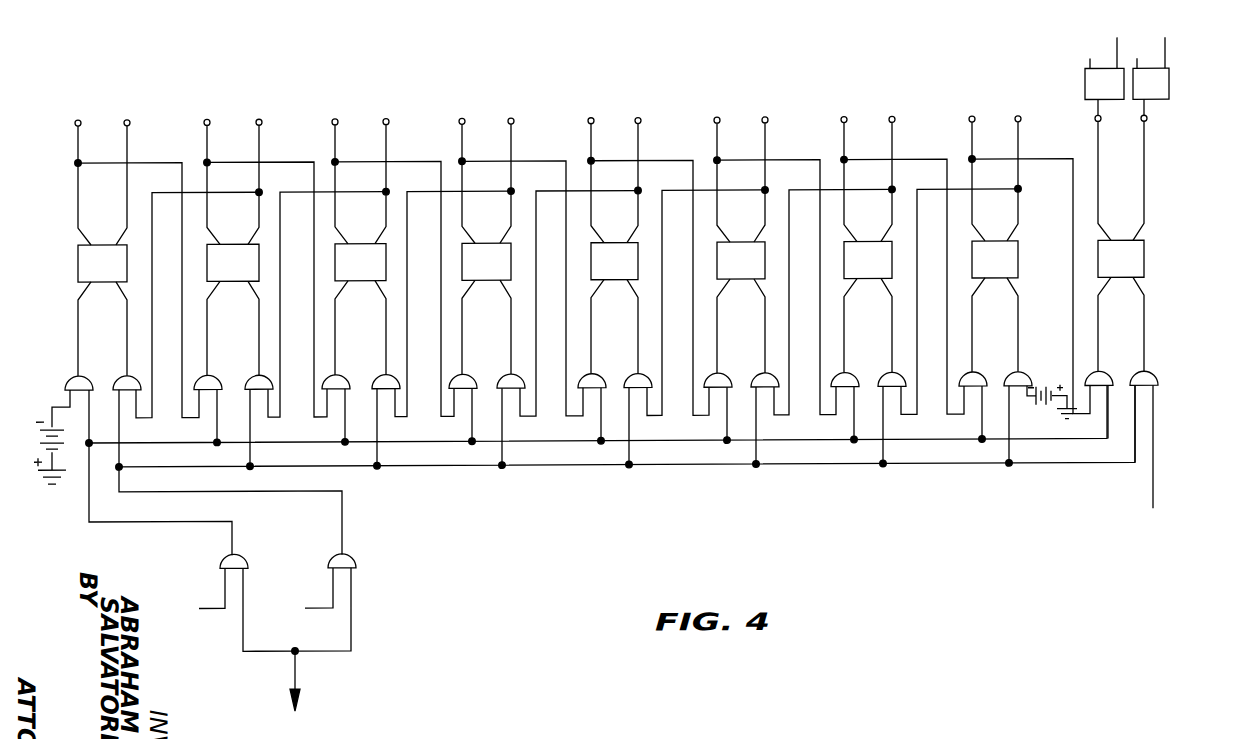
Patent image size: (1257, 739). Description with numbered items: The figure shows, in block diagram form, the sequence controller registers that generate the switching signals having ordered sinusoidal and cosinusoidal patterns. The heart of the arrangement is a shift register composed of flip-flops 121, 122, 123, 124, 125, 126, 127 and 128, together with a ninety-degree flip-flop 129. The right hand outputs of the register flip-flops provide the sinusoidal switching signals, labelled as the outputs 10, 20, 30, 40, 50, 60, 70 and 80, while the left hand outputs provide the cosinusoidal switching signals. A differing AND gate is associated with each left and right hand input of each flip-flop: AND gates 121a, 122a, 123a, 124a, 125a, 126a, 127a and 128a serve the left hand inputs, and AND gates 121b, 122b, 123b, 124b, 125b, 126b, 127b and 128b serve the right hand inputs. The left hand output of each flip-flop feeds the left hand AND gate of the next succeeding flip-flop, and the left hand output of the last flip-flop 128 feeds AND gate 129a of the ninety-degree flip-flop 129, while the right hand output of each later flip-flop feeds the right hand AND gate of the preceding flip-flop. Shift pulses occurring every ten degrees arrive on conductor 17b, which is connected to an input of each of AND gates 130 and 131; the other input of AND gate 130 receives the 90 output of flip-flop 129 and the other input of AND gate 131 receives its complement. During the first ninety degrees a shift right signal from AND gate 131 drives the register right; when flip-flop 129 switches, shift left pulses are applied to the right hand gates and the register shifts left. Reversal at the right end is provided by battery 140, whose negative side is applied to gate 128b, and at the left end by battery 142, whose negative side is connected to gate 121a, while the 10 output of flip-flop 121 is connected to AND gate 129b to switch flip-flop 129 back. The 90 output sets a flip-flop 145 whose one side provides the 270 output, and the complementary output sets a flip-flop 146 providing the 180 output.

The conductor 17b is at (298, 672).
The 10 output of flip-flop 121 10 is at (91, 90).
The 20 output of flip-flop 122 20 is at (220, 90).
The 30 output of flip-flop 123 30 is at (348, 90).
The 40 output of flip-flop 124 40 is at (475, 90).
The 50 output of flip-flop 125 50 is at (604, 90).
The 60 output of flip-flop 126 60 is at (730, 90).
The 70 output of flip-flop 127 70 is at (857, 90).
The 80 output of flip-flop 128 80 is at (985, 90).
The 90 output of flip-flop 129 90 is at (1190, 115).
The 180 output 180 is at (1123, 38).
The 270 output 270 is at (1094, 38).
The flip-flop 121 is at (118, 212).
The AND gate 121a is at (103, 358).
The AND gate 121b is at (131, 393).
The flip-flop 122 is at (247, 212).
The AND gate 122a is at (232, 358).
The AND gate 122b is at (263, 393).
The flip-flop 123 is at (375, 212).
The AND gate 123a is at (360, 358).
The AND gate 123b is at (390, 393).
The flip-flop 124 is at (502, 212).
The AND gate 124a is at (487, 358).
The AND gate 124b is at (515, 393).
The flip-flop 125 is at (631, 212).
The AND gate 125a is at (616, 358).
The AND gate 125b is at (642, 393).
The flip-flop 126 is at (757, 212).
The AND gate 126a is at (742, 358).
The AND gate 126b is at (769, 393).
The flip-flop 127 is at (884, 212).
The AND gate 127a is at (869, 358).
The AND gate 127b is at (896, 393).
The flip-flop 128 is at (1012, 212).
The AND gate 128a is at (997, 358).
The AND gate 128b is at (1034, 358).
The 90° flip-flop 129 is at (1138, 212).
The AND gate 129a is at (1123, 358).
The AND gate 129b is at (1158, 380).
The AND gate 130 is at (228, 562).
The AND gate 131 is at (350, 563).
The battery 140 is at (1043, 410).
The battery 142 is at (62, 452).
The flip-flop 145 is at (1085, 94).
The flip-flop 146 is at (1169, 86).